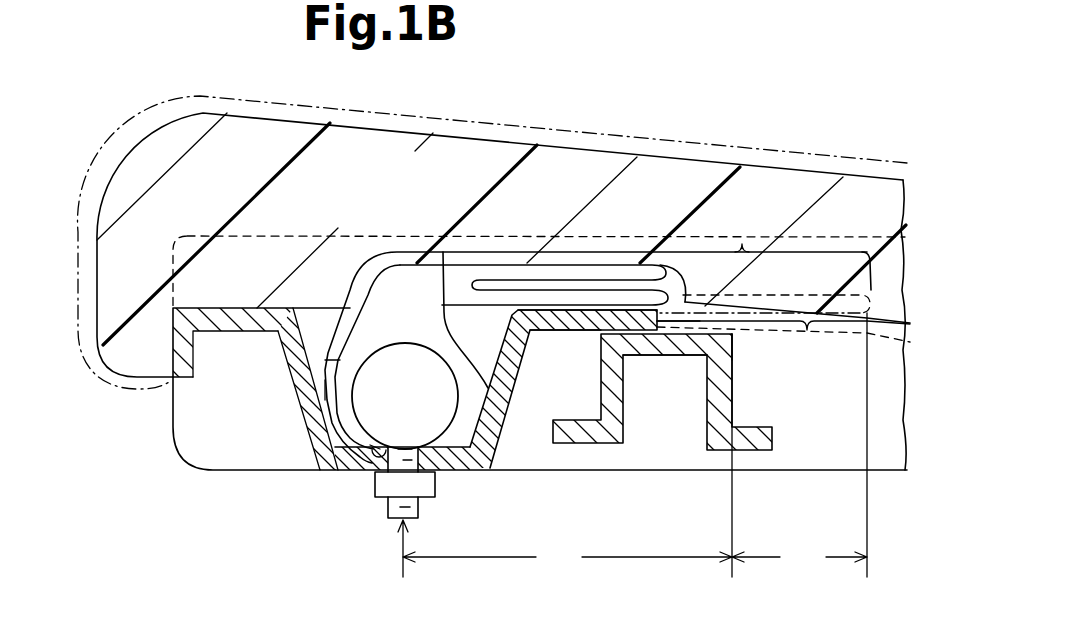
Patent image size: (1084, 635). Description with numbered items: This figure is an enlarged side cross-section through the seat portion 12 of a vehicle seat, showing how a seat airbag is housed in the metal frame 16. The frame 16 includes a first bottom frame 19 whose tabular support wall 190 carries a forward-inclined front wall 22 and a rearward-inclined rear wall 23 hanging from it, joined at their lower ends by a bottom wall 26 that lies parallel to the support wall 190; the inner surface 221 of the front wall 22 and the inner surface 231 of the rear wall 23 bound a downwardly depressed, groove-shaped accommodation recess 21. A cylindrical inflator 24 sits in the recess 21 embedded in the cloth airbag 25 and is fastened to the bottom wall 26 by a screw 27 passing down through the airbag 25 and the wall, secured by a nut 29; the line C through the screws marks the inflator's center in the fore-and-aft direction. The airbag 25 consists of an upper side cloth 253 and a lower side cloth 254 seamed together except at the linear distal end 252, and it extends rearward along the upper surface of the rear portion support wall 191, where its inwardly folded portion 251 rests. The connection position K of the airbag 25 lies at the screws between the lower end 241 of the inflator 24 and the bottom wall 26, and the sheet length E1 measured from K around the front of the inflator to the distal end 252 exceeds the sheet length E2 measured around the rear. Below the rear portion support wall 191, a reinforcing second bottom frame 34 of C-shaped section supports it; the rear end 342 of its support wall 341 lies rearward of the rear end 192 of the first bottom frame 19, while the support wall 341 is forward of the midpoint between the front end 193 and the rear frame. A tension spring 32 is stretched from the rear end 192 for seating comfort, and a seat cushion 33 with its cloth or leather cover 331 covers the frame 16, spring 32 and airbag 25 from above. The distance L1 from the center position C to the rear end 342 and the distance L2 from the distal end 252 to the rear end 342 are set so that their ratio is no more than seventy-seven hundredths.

The seat portion 12 is at (121, 478).
The metal frame 16 is at (173, 425).
The first bottom frame 19 is at (510, 435).
The accommodation recess 21 is at (325, 418).
The front wall 22 is at (307, 391).
The rear wall 23 is at (503, 381).
The inflator 24 is at (408, 357).
The airbag 25 is at (463, 197).
The bottom wall 26 is at (343, 472).
The screw 27 is at (388, 512).
The nut 29 is at (375, 480).
The tension spring 32 is at (852, 338).
The seat cushion 33 is at (126, 352).
The second bottom frame 34 is at (602, 452).
The support wall 190 is at (237, 320).
The rear portion support wall 191 is at (570, 332).
The rear end 192 is at (655, 328).
The front end 193 is at (168, 317).
The inner surface 221 is at (336, 357).
The inner surface 231 is at (487, 352).
The lower end 241 is at (373, 447).
The inwardly folded portion 251 is at (580, 278).
The distal end 252 is at (887, 290).
The upper side cloth 253 is at (380, 272).
The lower side cloth 254 is at (443, 253).
The cover 331 is at (184, 97).
The support wall 341 is at (668, 356).
The rear end 342 is at (740, 343).
The sheet length E1 is at (742, 244).
The sheet length E2 is at (807, 330).
The connection position K is at (405, 447).
The distance L1 is at (567, 455).
The distance L2 is at (799, 445).
The center position C is at (403, 566).